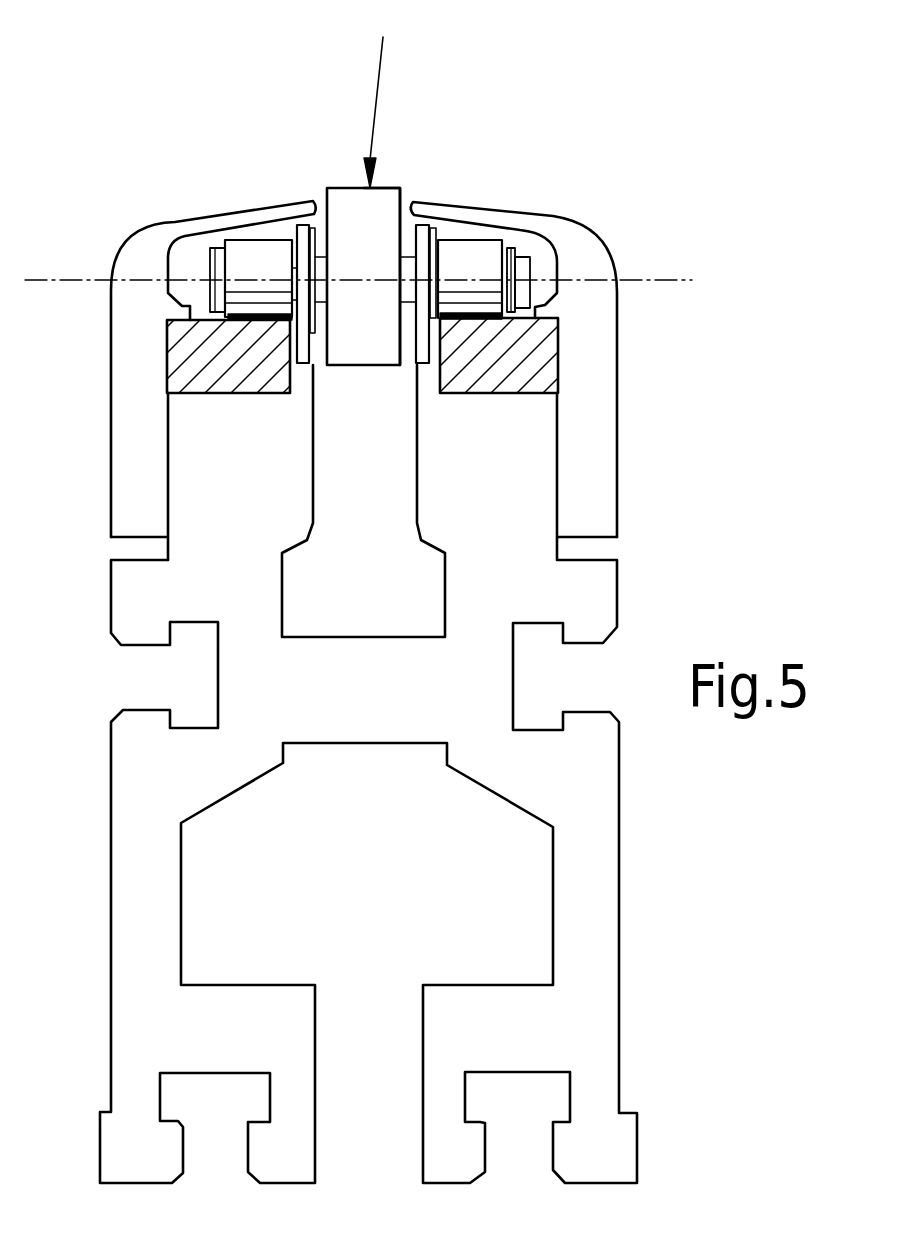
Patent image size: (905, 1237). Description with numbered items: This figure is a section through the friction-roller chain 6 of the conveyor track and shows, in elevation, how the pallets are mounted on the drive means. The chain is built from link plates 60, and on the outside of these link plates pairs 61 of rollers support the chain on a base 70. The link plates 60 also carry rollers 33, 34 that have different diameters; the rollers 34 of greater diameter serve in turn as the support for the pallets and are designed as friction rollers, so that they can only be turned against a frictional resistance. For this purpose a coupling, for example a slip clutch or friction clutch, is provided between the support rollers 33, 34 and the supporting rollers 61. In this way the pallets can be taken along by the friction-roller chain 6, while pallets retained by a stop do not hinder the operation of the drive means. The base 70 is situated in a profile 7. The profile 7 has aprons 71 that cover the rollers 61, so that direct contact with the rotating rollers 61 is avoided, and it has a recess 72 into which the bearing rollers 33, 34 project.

The friction-roller chain 6 is at (384, 94).
The profile 7 is at (615, 430).
The roller 33 is at (352, 197).
The roller 34 is at (388, 197).
The link plate 60 is at (310, 210).
The pair of rollers 61 is at (243, 262).
The base 70 is at (197, 362).
The apron 71 is at (155, 242).
The recess 72 is at (383, 476).